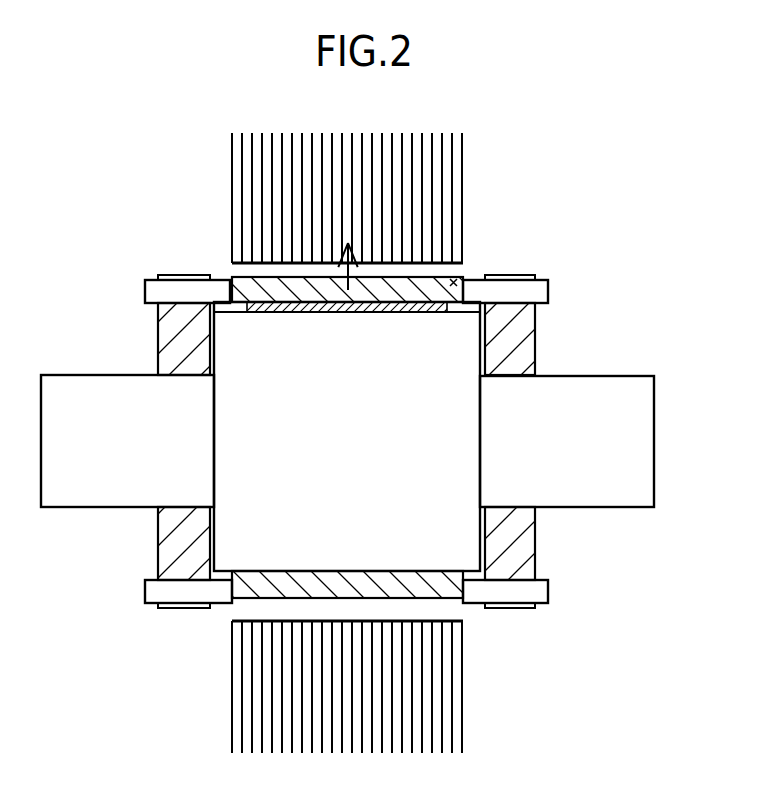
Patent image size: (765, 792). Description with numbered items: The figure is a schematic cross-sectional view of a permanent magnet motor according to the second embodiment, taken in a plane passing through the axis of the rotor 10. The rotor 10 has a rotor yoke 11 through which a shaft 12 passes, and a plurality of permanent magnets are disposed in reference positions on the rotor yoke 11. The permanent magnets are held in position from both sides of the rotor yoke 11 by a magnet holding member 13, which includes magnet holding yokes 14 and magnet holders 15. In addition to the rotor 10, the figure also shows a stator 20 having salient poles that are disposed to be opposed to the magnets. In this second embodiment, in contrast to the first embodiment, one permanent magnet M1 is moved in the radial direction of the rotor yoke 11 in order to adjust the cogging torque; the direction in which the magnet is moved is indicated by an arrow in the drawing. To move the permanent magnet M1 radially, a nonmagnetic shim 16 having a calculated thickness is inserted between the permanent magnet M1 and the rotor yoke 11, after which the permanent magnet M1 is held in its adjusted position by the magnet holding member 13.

The rotor 10 is at (347, 387).
The rotor yoke 11 is at (458, 484).
The shaft 12 is at (611, 390).
The magnet holding member 13 is at (171, 257).
The magnet holding yoke 14 is at (167, 338).
The magnet holder 15 is at (155, 292).
The nonmagnetic shim 16 is at (258, 307).
The stator 20 is at (487, 146).
The permanent magnet M1 is at (454, 282).